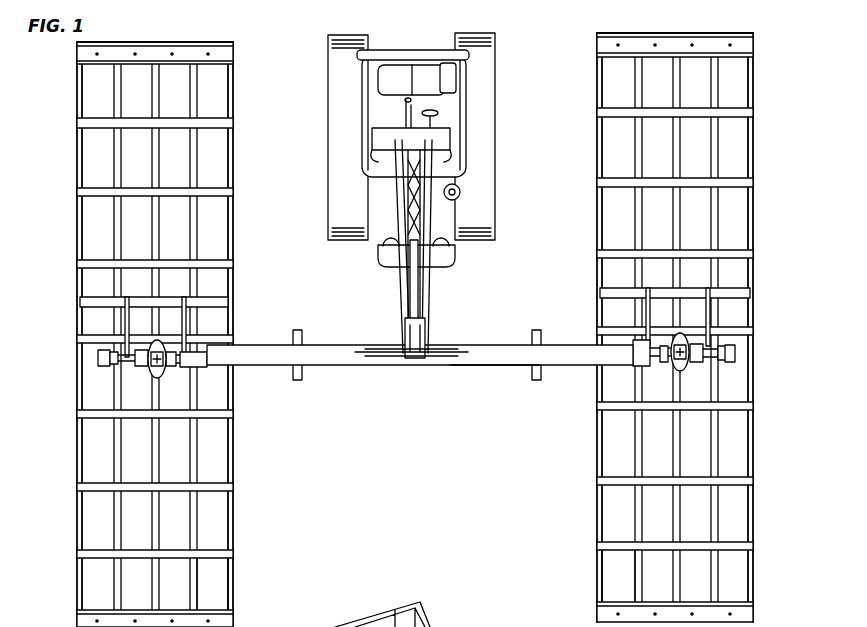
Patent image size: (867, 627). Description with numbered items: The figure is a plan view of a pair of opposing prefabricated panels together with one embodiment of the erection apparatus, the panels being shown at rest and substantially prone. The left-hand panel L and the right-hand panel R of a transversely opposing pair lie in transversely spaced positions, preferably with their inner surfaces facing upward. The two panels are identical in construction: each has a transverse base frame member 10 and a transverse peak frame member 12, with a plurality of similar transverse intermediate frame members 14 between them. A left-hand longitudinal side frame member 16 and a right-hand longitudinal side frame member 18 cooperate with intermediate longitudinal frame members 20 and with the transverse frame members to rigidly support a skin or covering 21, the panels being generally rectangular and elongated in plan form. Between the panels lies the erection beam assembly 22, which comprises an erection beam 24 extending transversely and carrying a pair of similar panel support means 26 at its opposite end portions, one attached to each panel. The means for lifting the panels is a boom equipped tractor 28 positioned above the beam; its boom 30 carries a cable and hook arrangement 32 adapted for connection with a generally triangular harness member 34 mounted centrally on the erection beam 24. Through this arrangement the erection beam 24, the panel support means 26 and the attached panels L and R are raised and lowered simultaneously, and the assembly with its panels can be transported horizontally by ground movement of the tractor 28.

The base frame member 10 is at (233, 606).
The peak frame member 12 is at (233, 47).
The intermediate frame members 14 is at (236, 340).
The left-hand longitudinal side frame member 16 is at (77, 155).
The right-hand longitudinal side frame member 18 is at (233, 155).
The intermediate longitudinal frame members 20 is at (190, 158).
The skin or covering 21 is at (215, 578).
The erection beam assembly 22 is at (466, 346).
The erection beam 24 is at (487, 366).
The panel support means 26 is at (110, 339).
The boom equipped tractor 28 is at (496, 128).
The boom 30 is at (426, 290).
The cable and hook arrangement 32 is at (418, 348).
The harness member 34 is at (395, 358).
The left-hand panel L is at (244, 520).
The right-hand panel R is at (590, 526).